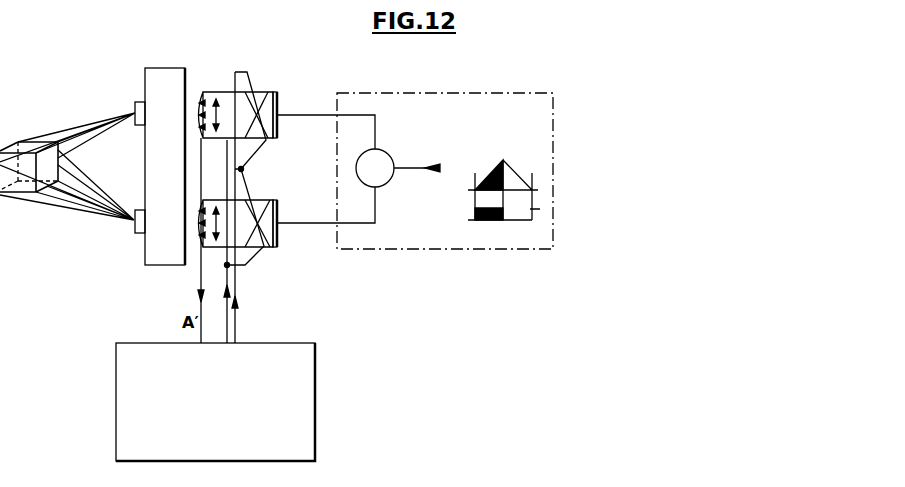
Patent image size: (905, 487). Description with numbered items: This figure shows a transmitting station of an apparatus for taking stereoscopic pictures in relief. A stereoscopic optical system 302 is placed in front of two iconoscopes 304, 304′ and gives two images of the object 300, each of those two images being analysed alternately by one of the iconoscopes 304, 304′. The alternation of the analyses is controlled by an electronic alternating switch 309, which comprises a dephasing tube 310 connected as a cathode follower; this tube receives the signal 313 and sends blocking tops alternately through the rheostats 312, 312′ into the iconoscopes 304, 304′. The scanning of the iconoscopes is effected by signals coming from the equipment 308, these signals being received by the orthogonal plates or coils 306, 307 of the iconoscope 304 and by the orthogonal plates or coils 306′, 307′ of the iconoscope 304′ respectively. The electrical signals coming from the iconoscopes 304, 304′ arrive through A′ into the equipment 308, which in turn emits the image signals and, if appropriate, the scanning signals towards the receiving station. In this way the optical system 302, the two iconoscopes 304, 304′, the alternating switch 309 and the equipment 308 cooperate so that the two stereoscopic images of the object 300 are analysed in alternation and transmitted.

The object 300 is at (30, 145).
The stereoscopic optical system 302 is at (163, 79).
The iconoscope 304 is at (202, 93).
The iconoscope 304′ is at (198, 249).
The orthogonal plate or coil 306 is at (258, 86).
The orthogonal plate or coil 306′ is at (264, 183).
The orthogonal plate or coil 307 is at (262, 145).
The orthogonal plate or coil 307′ is at (261, 252).
The equipment 308 is at (301, 388).
The electronic alternating switch 309 is at (493, 109).
The dephasing tube 310 is at (381, 158).
The rheostat 312 is at (293, 128).
The rheostat 312′ is at (305, 210).
The signal 313 is at (523, 168).